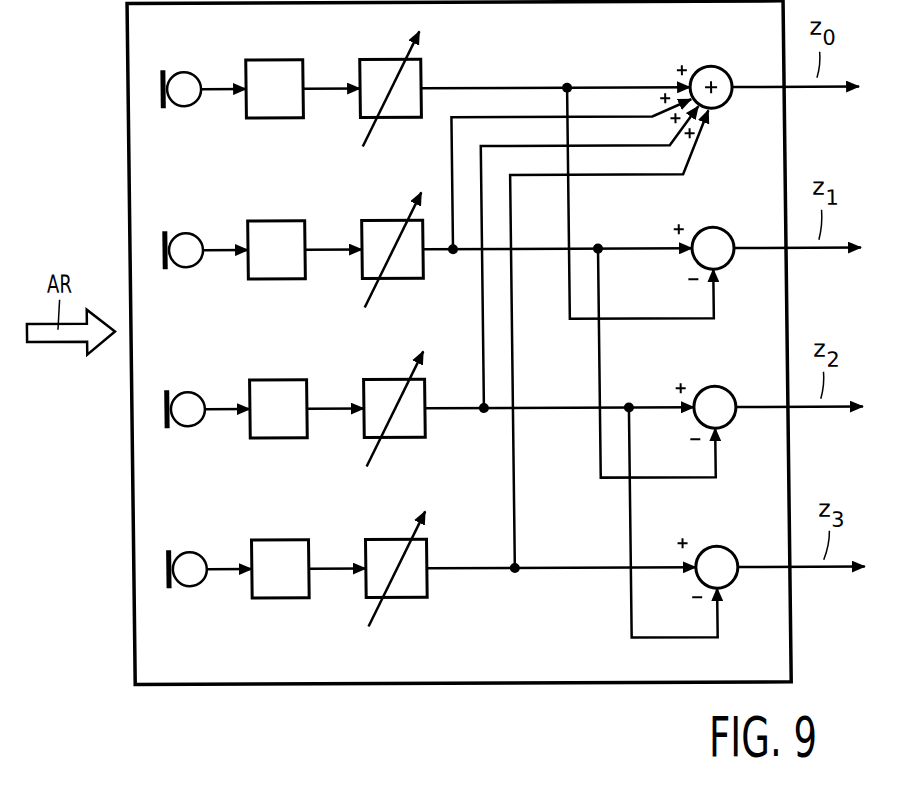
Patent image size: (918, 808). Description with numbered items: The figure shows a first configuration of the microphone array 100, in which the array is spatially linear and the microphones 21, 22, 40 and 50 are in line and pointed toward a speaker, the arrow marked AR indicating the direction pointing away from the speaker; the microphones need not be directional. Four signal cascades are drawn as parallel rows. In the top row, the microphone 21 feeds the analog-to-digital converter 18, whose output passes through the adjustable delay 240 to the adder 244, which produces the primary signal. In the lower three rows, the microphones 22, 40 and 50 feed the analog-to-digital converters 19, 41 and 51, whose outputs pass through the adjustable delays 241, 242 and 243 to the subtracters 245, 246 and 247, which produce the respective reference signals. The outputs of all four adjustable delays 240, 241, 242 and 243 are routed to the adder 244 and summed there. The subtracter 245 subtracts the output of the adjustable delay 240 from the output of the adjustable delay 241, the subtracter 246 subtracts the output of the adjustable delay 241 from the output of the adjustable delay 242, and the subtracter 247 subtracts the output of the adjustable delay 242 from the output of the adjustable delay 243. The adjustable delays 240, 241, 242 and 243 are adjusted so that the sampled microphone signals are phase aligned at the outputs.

The microphone array 100 is at (143, 141).
The microphone 21 is at (181, 81).
The microphone 22 is at (182, 241).
The microphone 40 is at (183, 401).
The microphone 50 is at (179, 561).
The analog-to-digital converter 18 is at (271, 111).
The analog-to-digital converter 19 is at (272, 269).
The analog-to-digital converter 41 is at (271, 429).
The analog-to-digital converter 51 is at (268, 589).
The adjustable delay 240 is at (402, 110).
The adjustable delay 241 is at (405, 271).
The adjustable delay 242 is at (402, 430).
The adjustable delay 243 is at (399, 590).
The adder 244 is at (711, 70).
The subtracter 245 is at (710, 231).
The subtracter 246 is at (711, 391).
The subtracter 247 is at (711, 551).